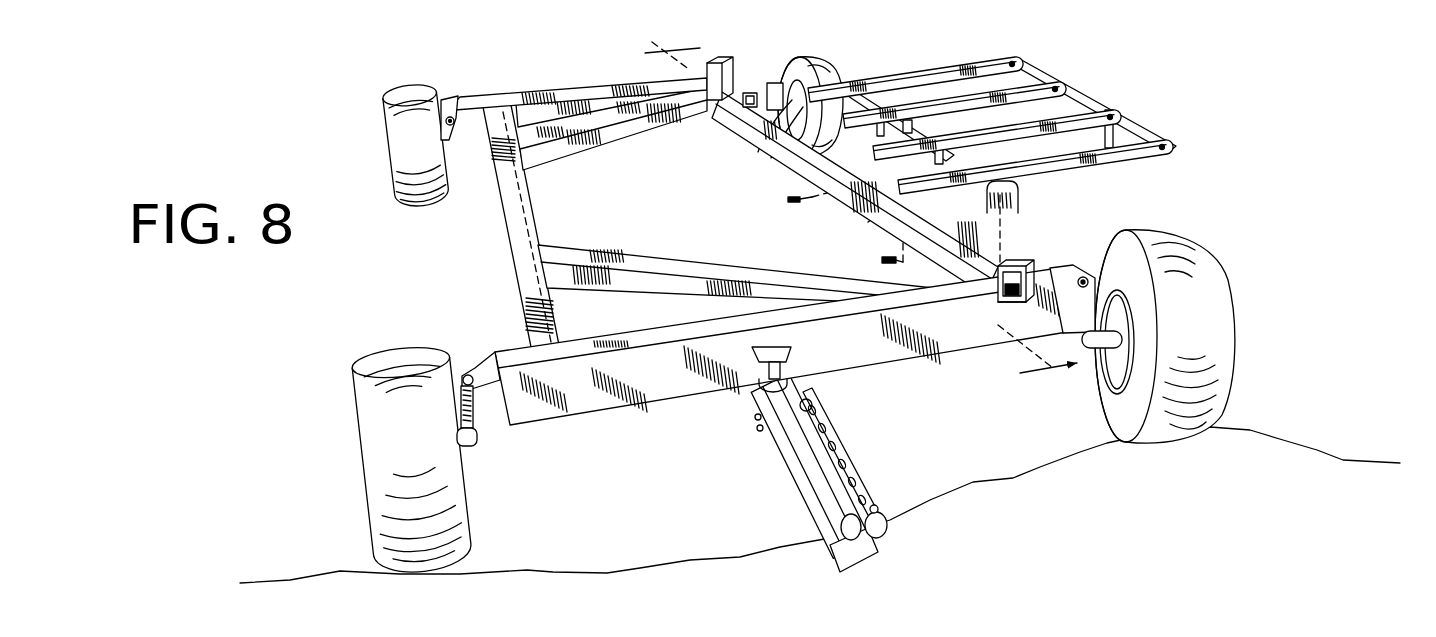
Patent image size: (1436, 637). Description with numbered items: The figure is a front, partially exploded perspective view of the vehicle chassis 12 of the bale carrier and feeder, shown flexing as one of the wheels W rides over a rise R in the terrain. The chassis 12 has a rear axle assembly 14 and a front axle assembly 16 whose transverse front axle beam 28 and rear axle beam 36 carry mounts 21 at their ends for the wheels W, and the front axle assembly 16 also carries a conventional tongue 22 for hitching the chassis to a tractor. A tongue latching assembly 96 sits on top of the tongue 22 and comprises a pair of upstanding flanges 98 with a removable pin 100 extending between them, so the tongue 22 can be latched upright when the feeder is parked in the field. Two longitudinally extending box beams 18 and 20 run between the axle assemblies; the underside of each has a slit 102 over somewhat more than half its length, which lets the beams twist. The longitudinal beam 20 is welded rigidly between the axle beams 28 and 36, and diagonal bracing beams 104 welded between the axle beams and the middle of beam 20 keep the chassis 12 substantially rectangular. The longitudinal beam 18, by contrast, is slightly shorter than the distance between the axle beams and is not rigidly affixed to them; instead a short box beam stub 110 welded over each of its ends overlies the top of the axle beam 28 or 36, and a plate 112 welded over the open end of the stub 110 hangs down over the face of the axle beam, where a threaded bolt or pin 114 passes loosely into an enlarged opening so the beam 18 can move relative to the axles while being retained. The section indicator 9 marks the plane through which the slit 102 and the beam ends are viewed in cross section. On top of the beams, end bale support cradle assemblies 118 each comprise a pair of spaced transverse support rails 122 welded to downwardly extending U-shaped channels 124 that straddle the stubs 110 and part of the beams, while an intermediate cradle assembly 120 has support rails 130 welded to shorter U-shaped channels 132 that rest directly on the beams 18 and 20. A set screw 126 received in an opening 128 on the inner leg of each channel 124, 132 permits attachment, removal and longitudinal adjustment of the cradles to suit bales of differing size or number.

The vehicle chassis 12 is at (558, 68).
The rear axle assembly 14 is at (600, 85).
The front axle assembly 16 is at (644, 388).
The longitudinal beam 18 is at (803, 158).
The longitudinal beam 20 is at (525, 190).
The mounts 21 is at (455, 138).
The tongue 22 is at (847, 472).
The front axle beam 28 is at (850, 357).
The rear axle beam 36 is at (527, 96).
The tongue latching assembly 96 is at (833, 523).
The upstanding flanges 98 is at (887, 528).
The removable pin 100 is at (875, 507).
The slit 102 is at (522, 224).
The diagonal bracing beams 104 is at (637, 125).
The box beam stub 110 is at (720, 62).
The plate 112 is at (1038, 278).
The threaded bolt or pin 114 is at (1006, 300).
The end bale support cradle assembly 118 is at (1157, 125).
The intermediate bale support cradle assembly 120 is at (1037, 62).
The support rails 122 is at (1070, 122).
The U-shaped channel 124 is at (1020, 192).
The set screw 126 is at (788, 200).
The opening 128 is at (775, 142).
The support rails 130 is at (990, 92).
The U-shaped channels 132 is at (873, 100).
The section line 9- 9 is at (861, 207).
The wheels W is at (410, 88).
The rise R is at (1332, 453).